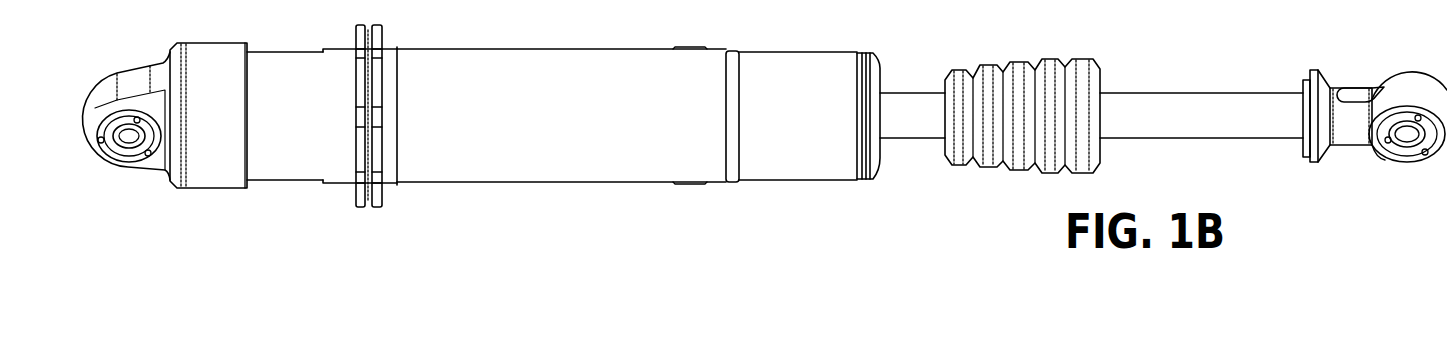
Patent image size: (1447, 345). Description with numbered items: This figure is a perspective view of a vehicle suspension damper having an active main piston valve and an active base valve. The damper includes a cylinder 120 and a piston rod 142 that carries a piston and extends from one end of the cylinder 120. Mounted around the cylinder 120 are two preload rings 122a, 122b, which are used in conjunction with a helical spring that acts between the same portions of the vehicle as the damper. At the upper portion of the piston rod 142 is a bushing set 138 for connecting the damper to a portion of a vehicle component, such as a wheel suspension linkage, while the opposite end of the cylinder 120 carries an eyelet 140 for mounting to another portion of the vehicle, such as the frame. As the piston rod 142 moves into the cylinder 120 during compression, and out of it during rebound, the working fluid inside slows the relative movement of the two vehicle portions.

The cylinder 120 is at (300, 50).
The preload ring 122a is at (361, 208).
The preload ring 122b is at (378, 208).
The bushing set 138 is at (1408, 72).
The eyelet 140 is at (118, 72).
The piston rod 142 is at (1235, 93).